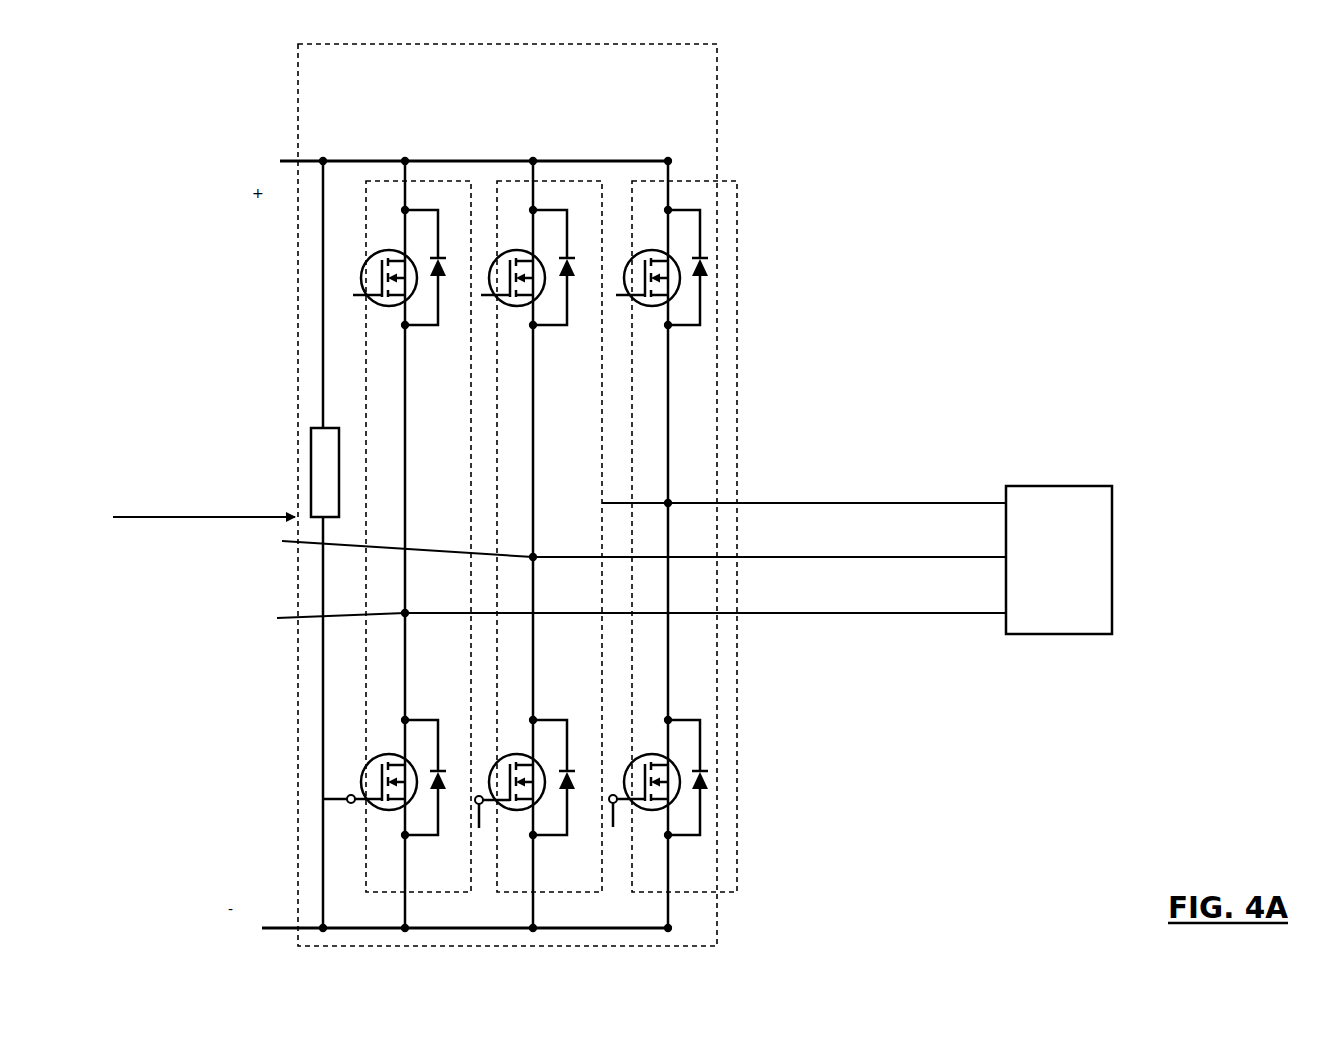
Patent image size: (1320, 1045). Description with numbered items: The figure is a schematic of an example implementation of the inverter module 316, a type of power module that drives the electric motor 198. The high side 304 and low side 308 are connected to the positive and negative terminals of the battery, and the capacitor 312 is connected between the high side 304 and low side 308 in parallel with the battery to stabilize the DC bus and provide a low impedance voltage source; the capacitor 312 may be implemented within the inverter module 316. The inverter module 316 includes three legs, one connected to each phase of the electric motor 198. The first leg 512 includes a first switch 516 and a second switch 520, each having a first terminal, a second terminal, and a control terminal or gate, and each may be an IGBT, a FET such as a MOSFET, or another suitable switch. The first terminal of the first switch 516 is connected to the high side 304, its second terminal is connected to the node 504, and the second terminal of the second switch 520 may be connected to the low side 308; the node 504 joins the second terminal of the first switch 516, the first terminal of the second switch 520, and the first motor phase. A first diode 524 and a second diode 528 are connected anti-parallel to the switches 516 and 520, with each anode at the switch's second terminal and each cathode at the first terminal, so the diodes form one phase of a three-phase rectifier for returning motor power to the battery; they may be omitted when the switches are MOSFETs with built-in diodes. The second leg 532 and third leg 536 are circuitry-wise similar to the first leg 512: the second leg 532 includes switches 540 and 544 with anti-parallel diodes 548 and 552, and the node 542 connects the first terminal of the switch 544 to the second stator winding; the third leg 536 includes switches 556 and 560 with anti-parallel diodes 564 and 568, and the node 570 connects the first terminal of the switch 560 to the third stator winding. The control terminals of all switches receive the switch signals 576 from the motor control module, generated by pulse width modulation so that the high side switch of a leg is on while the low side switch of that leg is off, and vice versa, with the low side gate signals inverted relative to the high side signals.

The electric motor 198 is at (1057, 634).
The high side 304 is at (280, 161).
The low side 308 is at (277, 928).
The capacitor 312 is at (311, 470).
The inverter module 316 is at (717, 70).
The node 504 is at (277, 618).
The first leg 512 is at (412, 181).
The first switch 516 is at (377, 248).
The second switch 520 is at (380, 742).
The first diode 524 is at (445, 248).
The second diode 528 is at (445, 745).
The second leg 532 is at (548, 181).
The third leg 536 is at (697, 181).
The switch 540 is at (518, 238).
The node 542 is at (282, 541).
The switch 544 is at (518, 745).
The diode 548 is at (577, 248).
The diode 552 is at (575, 752).
The switch 556 is at (655, 238).
The switch 560 is at (658, 742).
The diode 564 is at (712, 265).
The diode 568 is at (712, 773).
The node 570 is at (602, 503).
The switch signals 576 is at (207, 517).